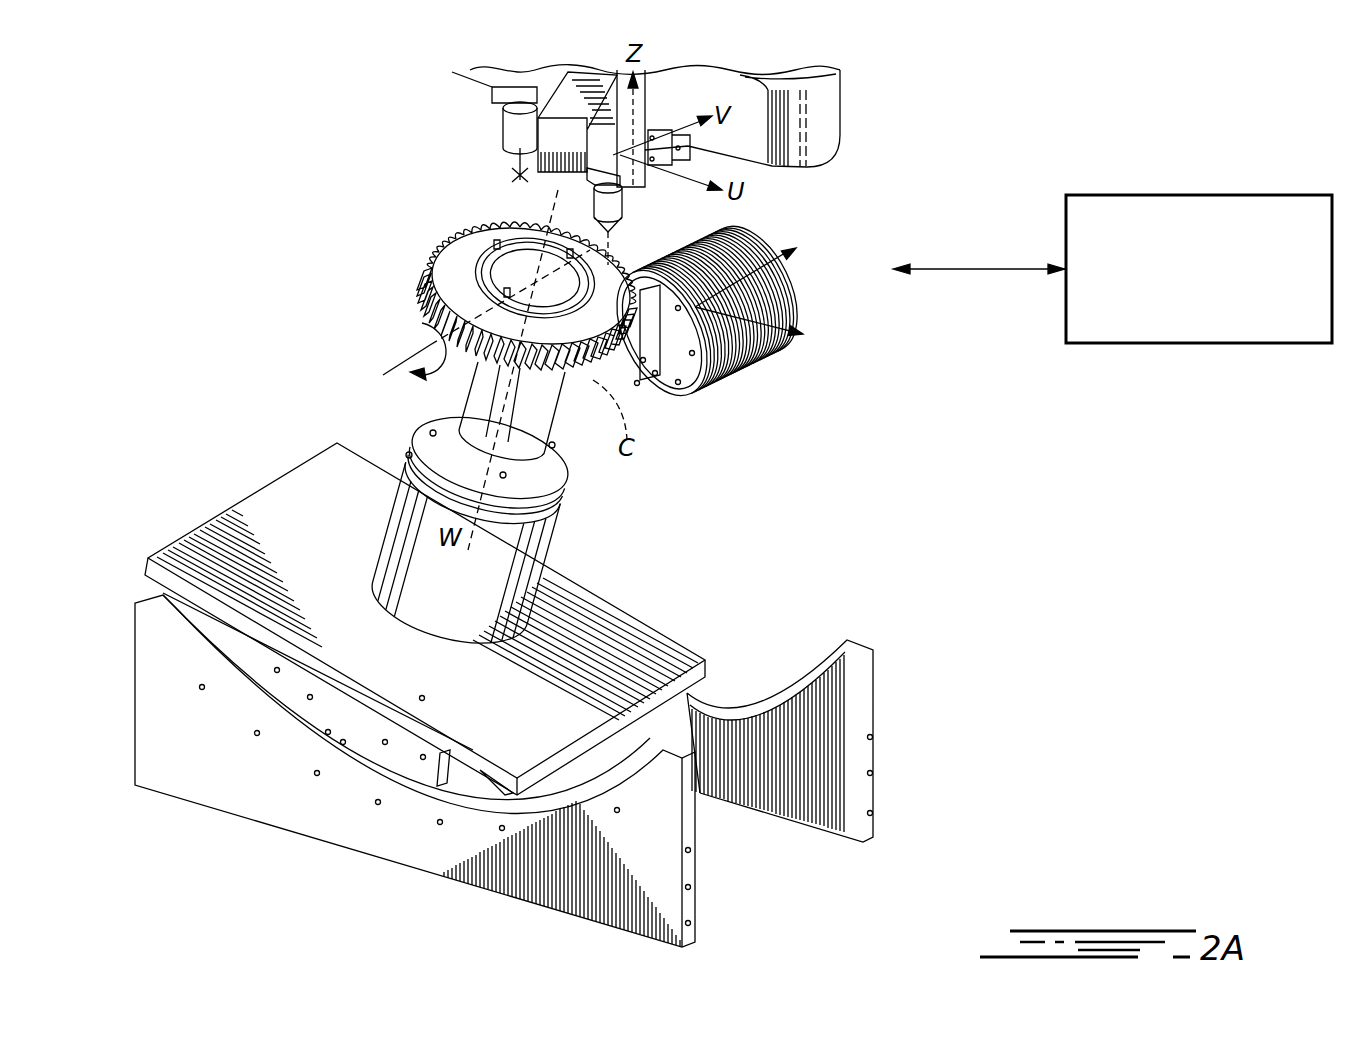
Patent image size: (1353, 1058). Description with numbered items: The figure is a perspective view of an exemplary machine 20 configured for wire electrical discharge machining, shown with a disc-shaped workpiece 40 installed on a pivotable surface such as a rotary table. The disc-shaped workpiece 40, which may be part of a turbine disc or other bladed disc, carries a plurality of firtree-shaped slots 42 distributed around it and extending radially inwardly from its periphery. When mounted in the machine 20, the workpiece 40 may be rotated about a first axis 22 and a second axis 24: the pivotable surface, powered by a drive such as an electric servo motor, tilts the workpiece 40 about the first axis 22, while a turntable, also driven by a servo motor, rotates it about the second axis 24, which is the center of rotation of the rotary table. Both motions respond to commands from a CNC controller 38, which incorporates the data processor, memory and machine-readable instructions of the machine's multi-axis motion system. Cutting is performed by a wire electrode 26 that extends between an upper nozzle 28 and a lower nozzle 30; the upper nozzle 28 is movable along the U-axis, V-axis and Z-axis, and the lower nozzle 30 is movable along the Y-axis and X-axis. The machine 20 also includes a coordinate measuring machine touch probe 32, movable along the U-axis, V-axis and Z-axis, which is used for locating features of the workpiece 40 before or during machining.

The machine 20 is at (232, 352).
The first axis 22 is at (403, 363).
The second axis 24 is at (503, 468).
The wire electrode 26 is at (600, 243).
The upper nozzle 28 is at (607, 205).
The lower nozzle 30 is at (658, 372).
The CMM touch probe 32 is at (522, 138).
The CNC controller 38 is at (1197, 343).
The disc-shaped workpiece 40 is at (460, 253).
The firtree-shaped slots 42 is at (418, 290).